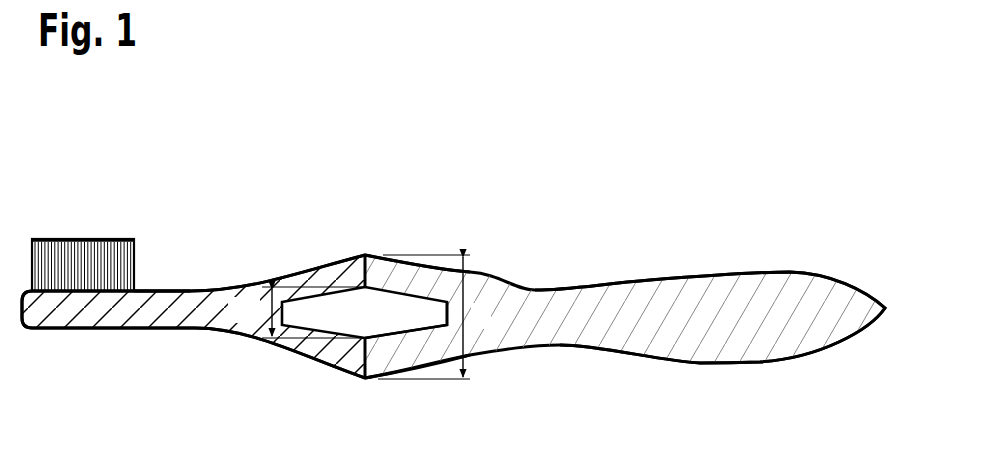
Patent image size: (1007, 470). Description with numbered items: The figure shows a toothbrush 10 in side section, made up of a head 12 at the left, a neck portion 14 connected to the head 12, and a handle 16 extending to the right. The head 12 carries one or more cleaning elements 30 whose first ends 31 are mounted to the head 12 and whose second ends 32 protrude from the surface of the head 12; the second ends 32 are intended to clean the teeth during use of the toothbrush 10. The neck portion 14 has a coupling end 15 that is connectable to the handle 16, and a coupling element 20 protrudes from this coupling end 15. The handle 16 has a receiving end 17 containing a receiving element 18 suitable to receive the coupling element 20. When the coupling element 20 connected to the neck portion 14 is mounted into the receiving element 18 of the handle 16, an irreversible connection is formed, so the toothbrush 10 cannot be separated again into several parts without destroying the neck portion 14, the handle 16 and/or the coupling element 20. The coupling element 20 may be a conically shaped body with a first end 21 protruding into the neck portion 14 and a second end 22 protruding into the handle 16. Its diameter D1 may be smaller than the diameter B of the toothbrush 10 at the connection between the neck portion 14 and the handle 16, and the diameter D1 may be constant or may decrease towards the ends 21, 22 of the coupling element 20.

The toothbrush 10 is at (518, 207).
The head 12 is at (65, 315).
The neck portion 14 is at (300, 280).
The coupling end 15 is at (357, 370).
The handle 16 is at (717, 290).
The receiving end 17 is at (373, 278).
The receiving element 18 is at (433, 291).
The coupling element 20 is at (357, 300).
The first end 21 is at (287, 318).
The second end 22 is at (438, 318).
The cleaning elements 30 is at (100, 265).
The first ends 31 is at (144, 288).
The second ends 32 is at (72, 237).
The diameter D1 is at (296, 312).
The diameter B is at (434, 317).